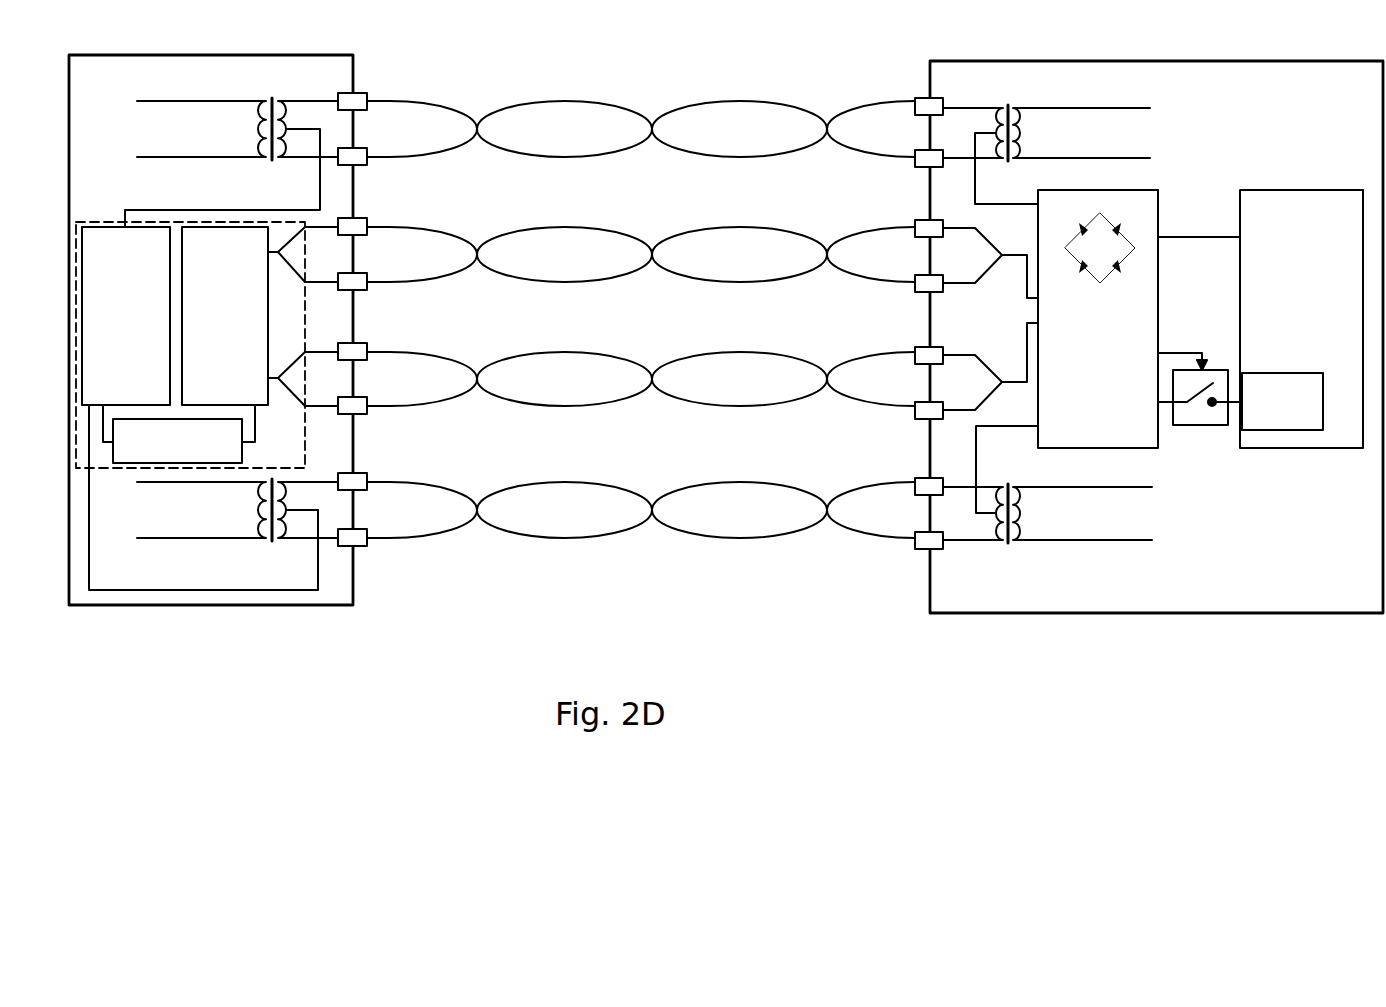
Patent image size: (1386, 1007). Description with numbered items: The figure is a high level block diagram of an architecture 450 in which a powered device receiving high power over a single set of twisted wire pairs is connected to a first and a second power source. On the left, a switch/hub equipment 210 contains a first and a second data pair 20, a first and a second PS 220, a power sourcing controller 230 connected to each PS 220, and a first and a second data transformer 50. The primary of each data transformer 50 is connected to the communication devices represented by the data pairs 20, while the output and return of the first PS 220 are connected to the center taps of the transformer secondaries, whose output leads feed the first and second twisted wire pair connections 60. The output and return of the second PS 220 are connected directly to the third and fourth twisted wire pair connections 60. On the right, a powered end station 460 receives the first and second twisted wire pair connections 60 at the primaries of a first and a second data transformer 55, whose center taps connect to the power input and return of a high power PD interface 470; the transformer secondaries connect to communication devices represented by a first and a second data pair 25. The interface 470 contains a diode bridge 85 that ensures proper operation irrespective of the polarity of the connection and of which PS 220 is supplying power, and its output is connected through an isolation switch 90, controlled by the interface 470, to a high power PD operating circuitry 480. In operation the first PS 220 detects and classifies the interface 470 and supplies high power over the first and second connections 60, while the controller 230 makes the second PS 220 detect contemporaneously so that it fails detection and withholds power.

The architecture 450 is at (650, 66).
The switch/hub equipment 210 is at (210, 605).
The powered end station 460 is at (1157, 613).
The data pair 20 is at (185, 157).
The data transformer 50 is at (273, 159).
The PS 220 is at (105, 222).
The power sourcing controller 230 is at (242, 452).
The twisted wire pair connection 60 is at (569, 157).
The data transformer 55 is at (1008, 107).
The data pair 25 is at (1085, 106).
The high power PD interface 470 is at (1158, 215).
The diode bridge 85 is at (1135, 248).
The isolation switch 90 is at (1205, 425).
The high power PD operating circuitry 480 is at (1302, 190).